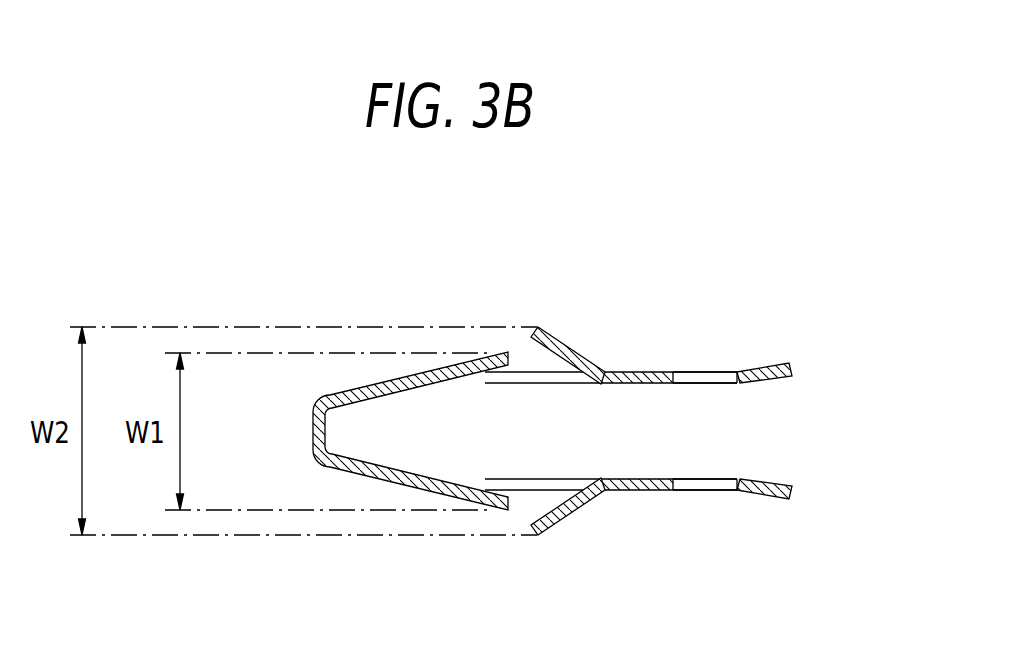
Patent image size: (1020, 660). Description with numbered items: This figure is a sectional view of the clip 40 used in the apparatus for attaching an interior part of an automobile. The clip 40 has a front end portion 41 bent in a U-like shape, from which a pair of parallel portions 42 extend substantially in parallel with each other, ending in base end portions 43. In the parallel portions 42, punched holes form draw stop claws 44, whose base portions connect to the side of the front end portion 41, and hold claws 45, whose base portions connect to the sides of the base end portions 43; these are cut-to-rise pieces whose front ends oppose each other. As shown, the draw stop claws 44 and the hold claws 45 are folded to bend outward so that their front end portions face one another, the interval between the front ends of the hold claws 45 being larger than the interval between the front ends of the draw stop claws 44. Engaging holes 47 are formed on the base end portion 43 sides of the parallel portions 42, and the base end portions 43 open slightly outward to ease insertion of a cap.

The clip 40 is at (256, 283).
The front end portion 41 is at (312, 437).
The parallel portion 42 is at (572, 386).
The base end portion 43 is at (766, 364).
The draw stop claw 44 is at (482, 352).
The hold claw 45 is at (571, 349).
The engaging hole 47 is at (713, 373).